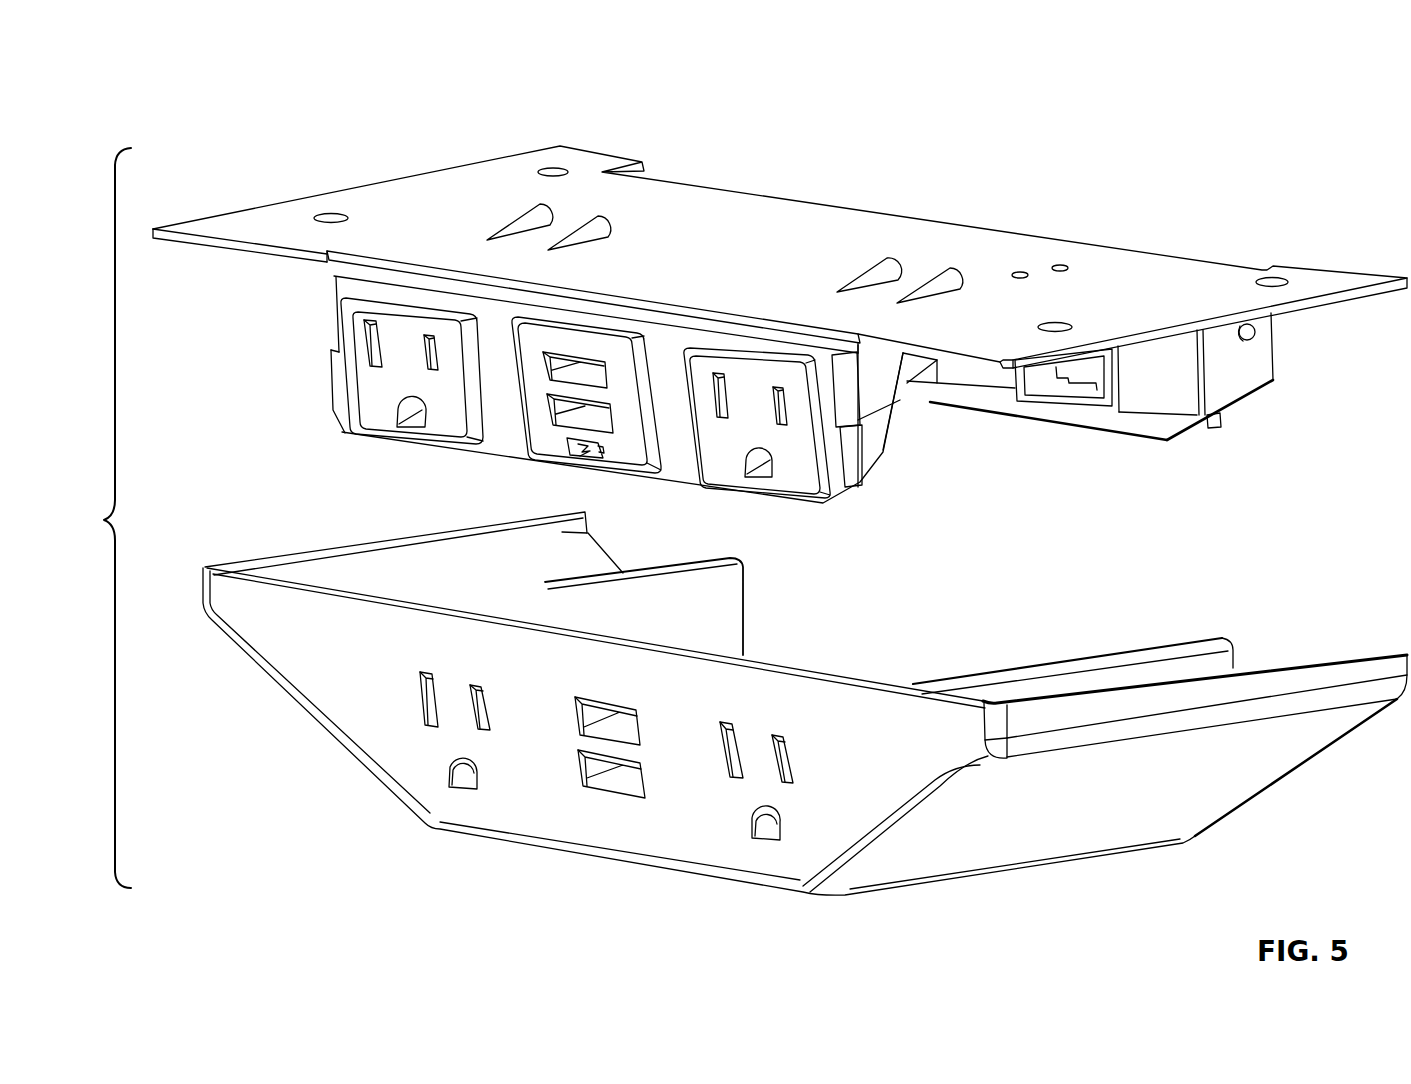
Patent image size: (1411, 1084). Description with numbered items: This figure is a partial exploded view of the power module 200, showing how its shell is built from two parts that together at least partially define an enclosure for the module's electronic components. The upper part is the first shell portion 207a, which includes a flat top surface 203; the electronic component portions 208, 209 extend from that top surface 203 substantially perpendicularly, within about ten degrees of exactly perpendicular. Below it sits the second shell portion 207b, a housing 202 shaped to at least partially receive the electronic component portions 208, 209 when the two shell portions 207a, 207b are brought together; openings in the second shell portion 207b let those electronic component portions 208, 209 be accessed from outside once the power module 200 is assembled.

The power module 200 is at (186, 72).
The housing 202 is at (1180, 828).
The top surface 203 is at (742, 205).
The first shell portion 207a is at (1342, 260).
The second shell portion 207b is at (1393, 644).
The electronic component portion 208 is at (836, 497).
The electronic component portion 209 is at (1243, 397).